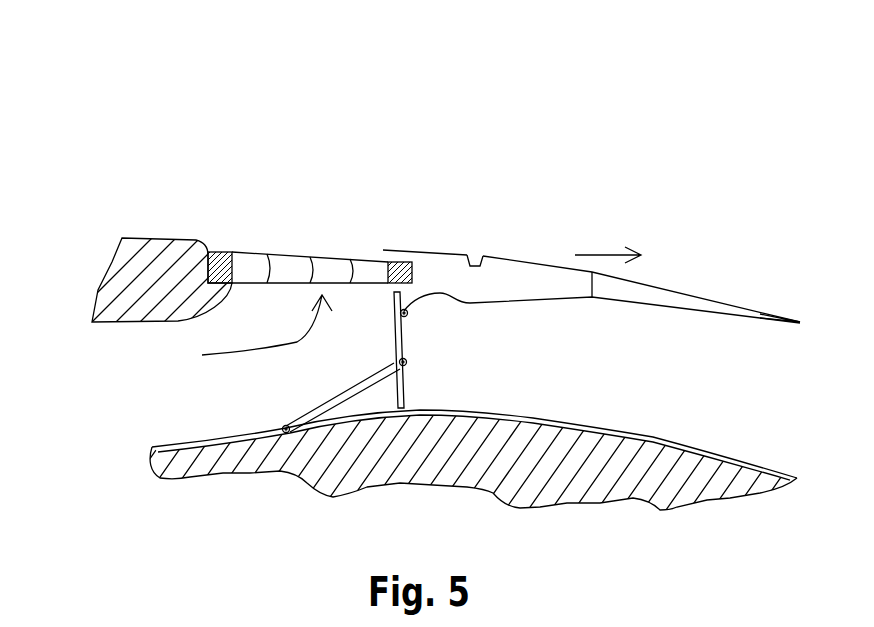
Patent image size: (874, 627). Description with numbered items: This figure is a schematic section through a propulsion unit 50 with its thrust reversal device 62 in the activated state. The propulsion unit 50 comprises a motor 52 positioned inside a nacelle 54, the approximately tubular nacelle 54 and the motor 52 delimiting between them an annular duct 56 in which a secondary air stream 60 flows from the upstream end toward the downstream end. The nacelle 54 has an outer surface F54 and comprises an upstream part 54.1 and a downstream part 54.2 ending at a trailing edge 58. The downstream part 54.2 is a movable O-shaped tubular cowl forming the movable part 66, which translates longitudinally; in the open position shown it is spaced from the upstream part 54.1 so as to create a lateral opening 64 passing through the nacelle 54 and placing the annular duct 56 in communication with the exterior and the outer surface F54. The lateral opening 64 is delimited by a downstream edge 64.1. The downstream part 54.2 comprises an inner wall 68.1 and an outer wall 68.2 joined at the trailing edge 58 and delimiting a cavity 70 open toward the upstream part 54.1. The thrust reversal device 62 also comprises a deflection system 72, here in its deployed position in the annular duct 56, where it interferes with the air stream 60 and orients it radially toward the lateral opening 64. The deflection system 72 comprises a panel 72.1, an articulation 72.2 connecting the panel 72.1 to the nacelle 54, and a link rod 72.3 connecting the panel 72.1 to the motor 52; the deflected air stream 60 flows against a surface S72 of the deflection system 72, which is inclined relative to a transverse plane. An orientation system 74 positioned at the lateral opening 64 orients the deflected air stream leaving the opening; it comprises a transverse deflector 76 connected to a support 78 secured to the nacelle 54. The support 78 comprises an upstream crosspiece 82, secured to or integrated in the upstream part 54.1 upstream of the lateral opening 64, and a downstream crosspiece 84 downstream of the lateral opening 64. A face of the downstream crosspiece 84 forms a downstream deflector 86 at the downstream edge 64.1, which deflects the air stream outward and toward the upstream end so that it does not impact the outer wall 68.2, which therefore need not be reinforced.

The propulsion unit 50 is at (100, 107).
The motor 52 is at (731, 496).
The nacelle 54 is at (126, 264).
The upstream part 54.1 is at (160, 283).
The downstream part 54.2 is at (538, 258).
The outer surface F54 is at (182, 237).
The annular duct 56 is at (151, 383).
The trailing edge 58 is at (800, 322).
The air stream 60 is at (250, 355).
The thrust reversal device 62 is at (310, 223).
The lateral opening 64 is at (265, 243).
The downstream edge 64.1 is at (380, 253).
The movable part 66 is at (508, 257).
The inner wall 68.1 is at (540, 300).
The outer wall 68.2 is at (462, 248).
The cavity 70 is at (473, 288).
The deflection system 72 is at (404, 348).
The panel 72.1 is at (403, 384).
The articulation 72.2 is at (406, 317).
The link rod 72.3 is at (337, 400).
The surface S72 is at (392, 338).
The orientation system 74 is at (285, 250).
The transverse deflector 76 is at (313, 257).
The support 78 is at (366, 260).
The upstream crosspiece 82 is at (217, 250).
The downstream crosspiece 84 is at (412, 250).
The downstream deflector 86 is at (388, 276).